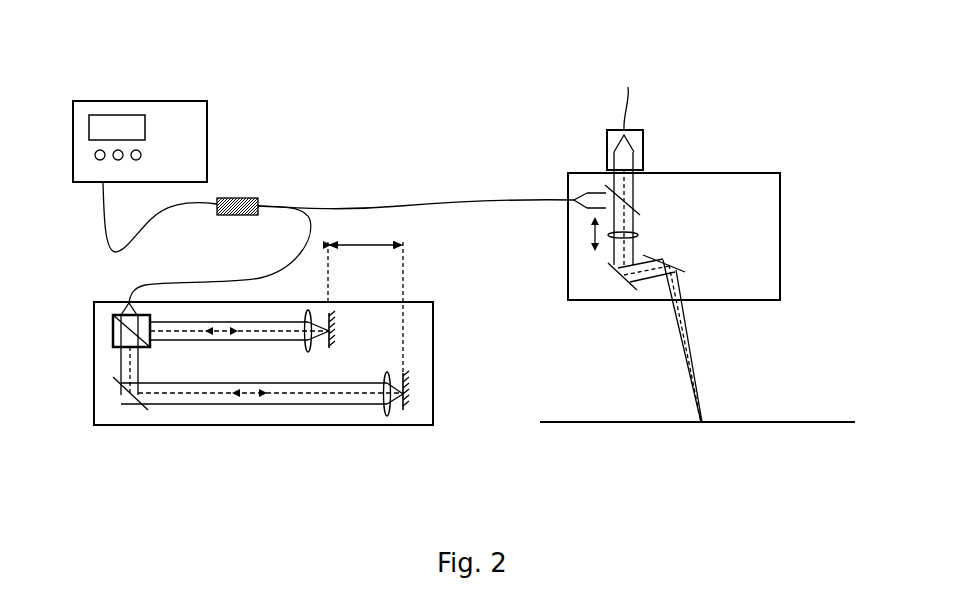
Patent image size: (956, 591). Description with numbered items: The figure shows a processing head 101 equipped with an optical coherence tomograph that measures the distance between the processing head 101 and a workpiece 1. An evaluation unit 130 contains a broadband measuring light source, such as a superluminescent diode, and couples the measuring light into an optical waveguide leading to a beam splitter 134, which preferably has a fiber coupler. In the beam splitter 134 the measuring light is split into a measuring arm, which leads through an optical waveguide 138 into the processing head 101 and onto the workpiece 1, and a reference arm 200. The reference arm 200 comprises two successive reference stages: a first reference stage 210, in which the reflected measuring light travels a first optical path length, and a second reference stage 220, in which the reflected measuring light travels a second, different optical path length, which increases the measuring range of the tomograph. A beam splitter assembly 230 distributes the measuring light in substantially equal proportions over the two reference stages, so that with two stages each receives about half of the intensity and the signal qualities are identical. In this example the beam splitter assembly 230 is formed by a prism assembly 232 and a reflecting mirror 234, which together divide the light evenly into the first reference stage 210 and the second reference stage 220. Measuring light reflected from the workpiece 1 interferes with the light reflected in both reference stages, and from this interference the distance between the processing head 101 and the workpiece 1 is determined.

The workpiece 1 is at (780, 422).
The processing head 101 is at (697, 173).
The evaluation unit 130 is at (159, 101).
The beam splitter 134 is at (245, 198).
The optical waveguide 138 is at (383, 208).
The reference arm 200 is at (263, 426).
The first reference stage 210 is at (438, 332).
The second reference stage 220 is at (438, 398).
The beam splitter assembly 230 is at (106, 361).
The prism assembly 232 is at (113, 316).
The reflecting mirror 234 is at (118, 390).